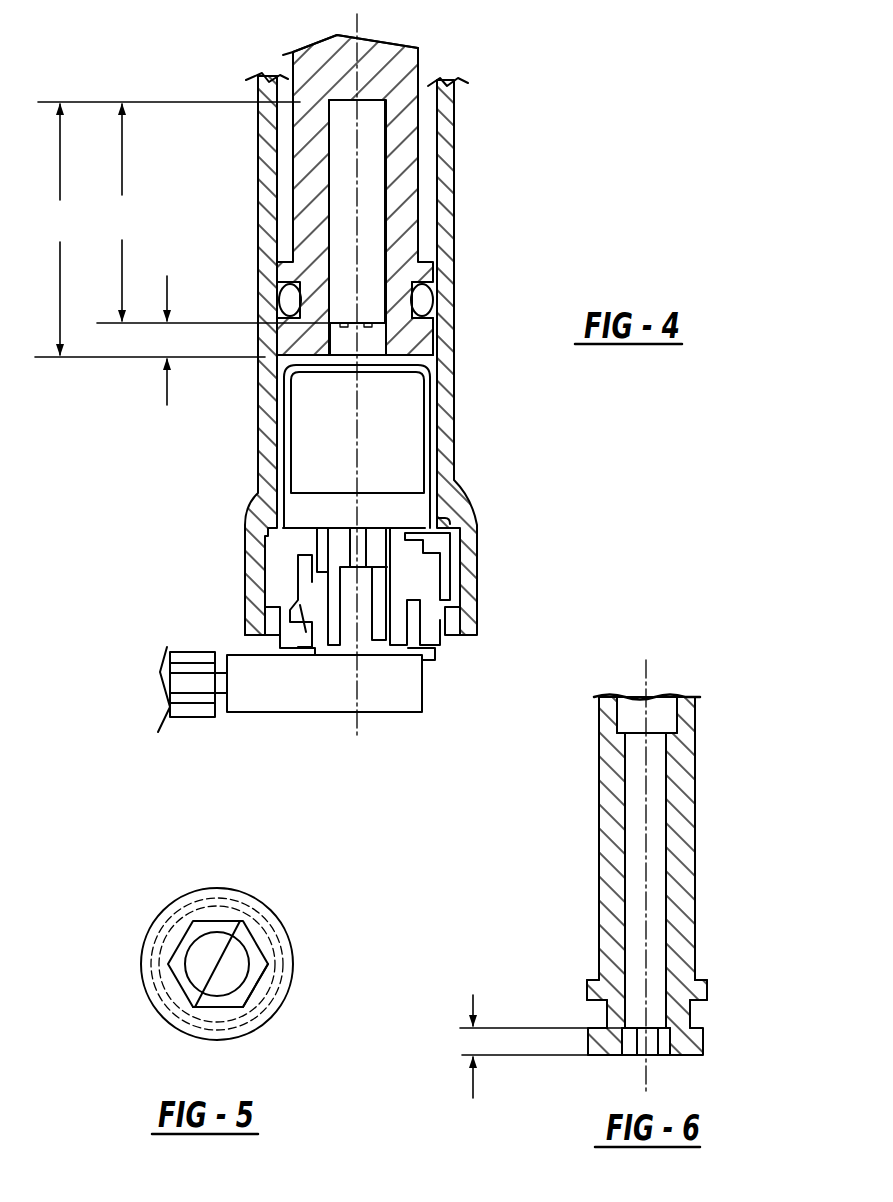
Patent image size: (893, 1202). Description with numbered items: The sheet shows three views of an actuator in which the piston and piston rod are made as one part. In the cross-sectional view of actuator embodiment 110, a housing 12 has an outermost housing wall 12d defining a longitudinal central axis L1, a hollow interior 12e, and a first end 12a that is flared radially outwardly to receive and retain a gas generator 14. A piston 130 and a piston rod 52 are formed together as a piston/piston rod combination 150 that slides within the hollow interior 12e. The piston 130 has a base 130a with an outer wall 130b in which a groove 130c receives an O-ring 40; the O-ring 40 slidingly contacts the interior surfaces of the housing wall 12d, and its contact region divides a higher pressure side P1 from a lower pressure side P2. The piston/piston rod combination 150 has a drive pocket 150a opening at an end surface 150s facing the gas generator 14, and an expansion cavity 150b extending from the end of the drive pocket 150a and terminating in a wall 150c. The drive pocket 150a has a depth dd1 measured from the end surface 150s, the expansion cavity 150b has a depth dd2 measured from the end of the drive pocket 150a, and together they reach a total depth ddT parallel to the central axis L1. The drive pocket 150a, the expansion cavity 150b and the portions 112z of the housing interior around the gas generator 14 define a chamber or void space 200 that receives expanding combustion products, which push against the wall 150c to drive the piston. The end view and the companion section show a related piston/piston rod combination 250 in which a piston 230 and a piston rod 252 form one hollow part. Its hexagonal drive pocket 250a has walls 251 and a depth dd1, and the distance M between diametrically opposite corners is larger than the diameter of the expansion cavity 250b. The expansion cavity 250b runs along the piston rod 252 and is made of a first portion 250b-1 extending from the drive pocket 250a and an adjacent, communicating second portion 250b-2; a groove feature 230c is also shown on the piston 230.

In FIG. 4, the longitudinal central axis L1 is at (360, 24).
In FIG. 6, the longitudinal central axis L1 is at (650, 660).
In FIG. 4, the housing 12 is at (462, 465).
In FIG. 5, the housing 12 is at (176, 906).
In FIG. 4, the hollow interior 12e is at (283, 88).
In FIG. 4, the outermost housing wall 12d is at (275, 240).
In FIG. 4, the first end 12a is at (255, 594).
In FIG. 4, the piston rod 52 is at (307, 148).
In FIG. 4, the lower pressure side P2 is at (284, 202).
In FIG. 4, the piston/piston rod combination 150 is at (290, 58).
In FIG. 4, the wall 150c is at (360, 100).
In FIG. 4, the expansion cavity 150b is at (370, 158).
In FIG. 4, the chamber or void space 200 is at (367, 288).
In FIG. 4, the piston 130 is at (297, 338).
In FIG. 4, the outer wall 130b is at (283, 286).
In FIG. 4, the O-ring 40 is at (430, 296).
In FIG. 4, the groove 130c is at (432, 311).
In FIG. 4, the base 130a is at (418, 337).
In FIG. 4, the higher pressure side P1 is at (437, 362).
In FIG. 4, the end surface 150s is at (438, 363).
In FIG. 4, the drive pocket 150a is at (345, 347).
In FIG. 4, the portions of the housing interior 112z is at (258, 372).
In FIG. 4, the gas generator 14 is at (322, 470).
In FIG. 4, the actuator embodiment 110 is at (486, 578).
In FIG. 4, the total depth ddT is at (167, 229).
In FIG. 4, the expansion cavity depth dd2 is at (213, 213).
In FIG. 4, the drive pocket depth dd1 is at (167, 325).
In FIG. 6, the drive pocket depth dd1 is at (541, 1033).
In FIG. 5, the piston/piston rod combination 250 is at (172, 1028).
In FIG. 6, the piston/piston rod combination 250 is at (607, 793).
In FIG. 5, the drive pocket 250a is at (257, 941).
In FIG. 6, the drive pocket 250a is at (622, 1040).
In FIG. 5, the expansion cavity 250b is at (248, 986).
In FIG. 6, the expansion cavity 250b is at (640, 872).
In FIG. 5, the distance between diametrically opposite corners M is at (218, 964).
In FIG. 5, the walls 251 is at (247, 1003).
In FIG. 6, the second portion 250b-2 is at (617, 712).
In FIG. 6, the first portion 250b-1 is at (665, 796).
In FIG. 6, the piston rod 252 is at (690, 918).
In FIG. 6, the piston 230 is at (612, 1010).
In FIG. 6, the flange groove 230c is at (691, 1012).